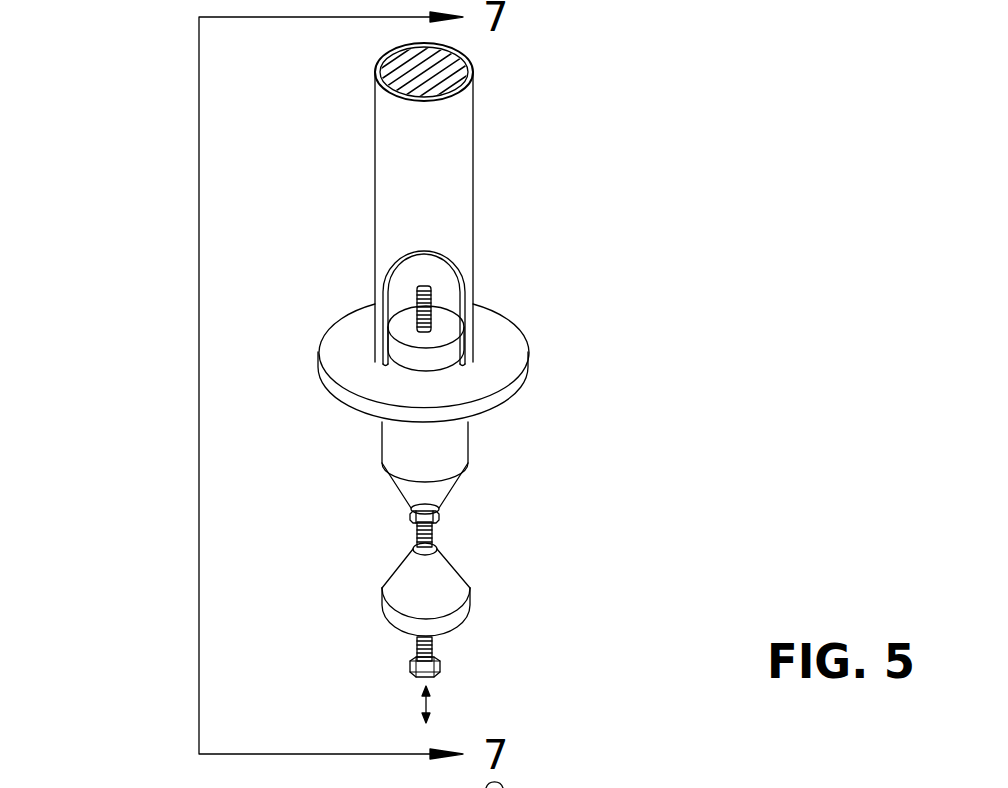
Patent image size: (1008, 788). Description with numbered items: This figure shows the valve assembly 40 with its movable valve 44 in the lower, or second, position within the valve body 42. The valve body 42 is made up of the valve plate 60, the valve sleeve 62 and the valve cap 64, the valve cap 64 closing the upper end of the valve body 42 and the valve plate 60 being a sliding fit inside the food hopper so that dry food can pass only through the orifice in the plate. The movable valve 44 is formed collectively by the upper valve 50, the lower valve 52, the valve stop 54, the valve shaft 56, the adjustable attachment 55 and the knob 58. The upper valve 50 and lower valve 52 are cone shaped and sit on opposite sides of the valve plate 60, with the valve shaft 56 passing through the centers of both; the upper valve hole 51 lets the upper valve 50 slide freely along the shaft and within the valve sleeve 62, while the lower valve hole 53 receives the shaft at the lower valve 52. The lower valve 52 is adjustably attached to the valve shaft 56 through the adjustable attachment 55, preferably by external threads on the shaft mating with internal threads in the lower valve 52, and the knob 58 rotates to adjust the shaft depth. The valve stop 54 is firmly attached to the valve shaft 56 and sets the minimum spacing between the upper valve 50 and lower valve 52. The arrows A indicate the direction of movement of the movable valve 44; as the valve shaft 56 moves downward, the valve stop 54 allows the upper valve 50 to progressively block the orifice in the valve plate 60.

The valve assembly 40 is at (172, 370).
The valve body 42 is at (497, 135).
The movable valve 44 is at (605, 345).
The upper valve 50 is at (443, 362).
The upper valve hole 51 is at (417, 331).
The lower valve 52 is at (385, 586).
The lower valve hole 53 is at (400, 641).
The valve stop 54 is at (440, 513).
The adjustable attachment 55 is at (410, 540).
The valve shaft 56 is at (418, 296).
The knob 58 is at (412, 666).
The valve plate 60 is at (517, 392).
The valve sleeve 62 is at (473, 207).
The valve cap 64 is at (375, 66).
The arrows A is at (432, 707).